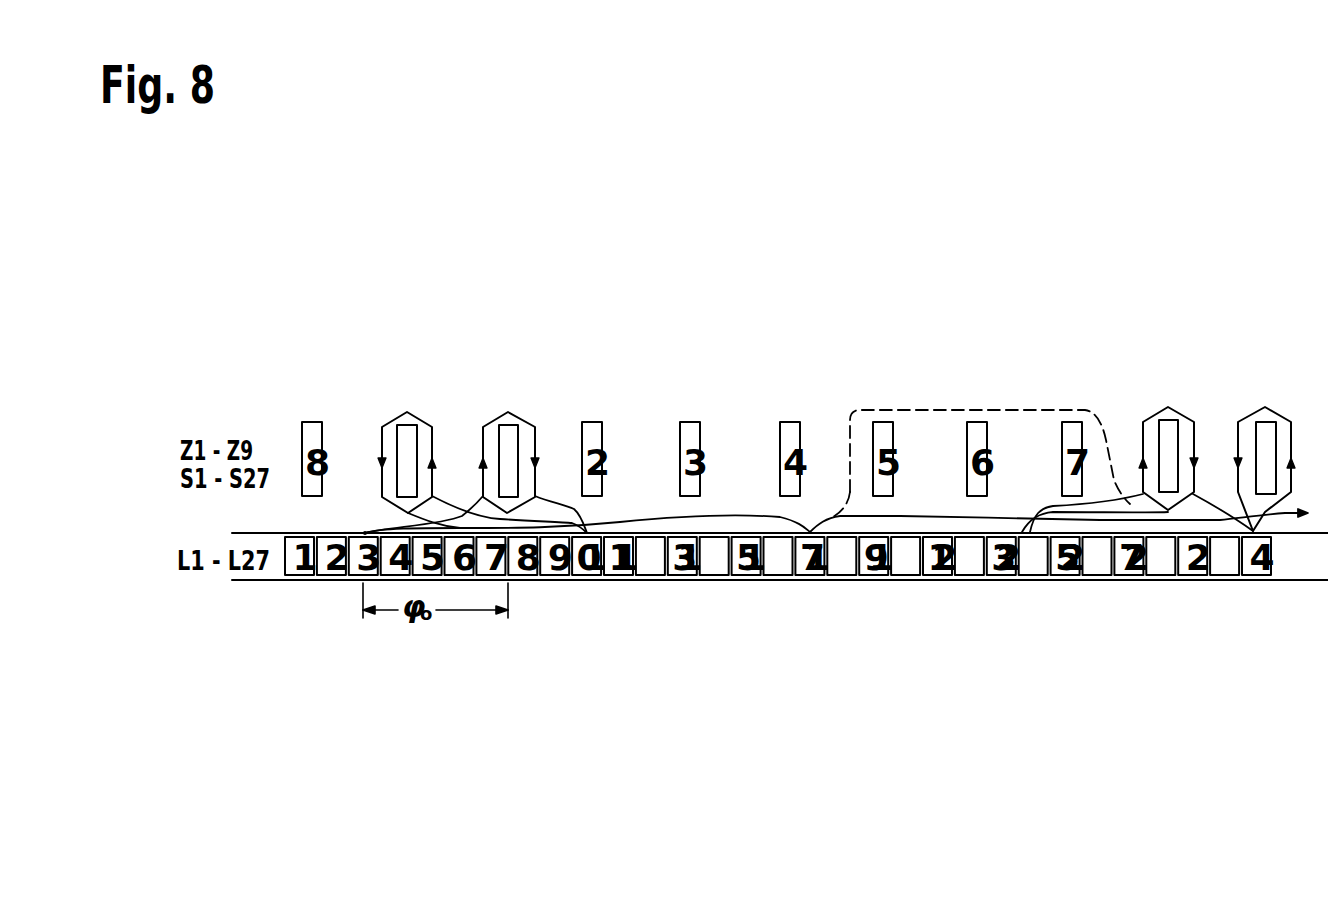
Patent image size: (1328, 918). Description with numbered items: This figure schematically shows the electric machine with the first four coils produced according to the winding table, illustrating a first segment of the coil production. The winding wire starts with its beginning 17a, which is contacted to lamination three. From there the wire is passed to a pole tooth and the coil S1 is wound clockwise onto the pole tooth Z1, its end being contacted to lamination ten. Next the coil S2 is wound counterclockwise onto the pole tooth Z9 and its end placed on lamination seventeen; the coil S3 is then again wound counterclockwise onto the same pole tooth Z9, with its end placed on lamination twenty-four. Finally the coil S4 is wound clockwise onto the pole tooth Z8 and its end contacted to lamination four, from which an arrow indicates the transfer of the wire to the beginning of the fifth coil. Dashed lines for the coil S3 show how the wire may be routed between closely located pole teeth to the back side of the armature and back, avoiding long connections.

The beginning of the winding wire 17a is at (365, 533).
The coil S1 is at (510, 419).
The coil S2 is at (405, 418).
The coil S3 is at (1260, 417).
The coil S4 is at (1167, 417).
The pole tooth Z1 is at (512, 420).
The pole tooth Z8 is at (1173, 417).
The pole tooth Z9 is at (410, 421).